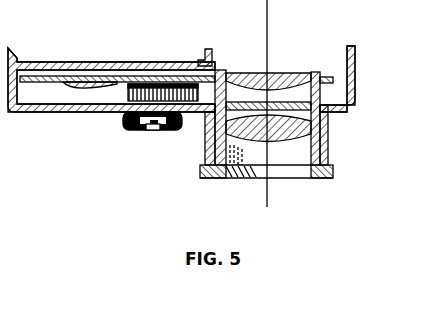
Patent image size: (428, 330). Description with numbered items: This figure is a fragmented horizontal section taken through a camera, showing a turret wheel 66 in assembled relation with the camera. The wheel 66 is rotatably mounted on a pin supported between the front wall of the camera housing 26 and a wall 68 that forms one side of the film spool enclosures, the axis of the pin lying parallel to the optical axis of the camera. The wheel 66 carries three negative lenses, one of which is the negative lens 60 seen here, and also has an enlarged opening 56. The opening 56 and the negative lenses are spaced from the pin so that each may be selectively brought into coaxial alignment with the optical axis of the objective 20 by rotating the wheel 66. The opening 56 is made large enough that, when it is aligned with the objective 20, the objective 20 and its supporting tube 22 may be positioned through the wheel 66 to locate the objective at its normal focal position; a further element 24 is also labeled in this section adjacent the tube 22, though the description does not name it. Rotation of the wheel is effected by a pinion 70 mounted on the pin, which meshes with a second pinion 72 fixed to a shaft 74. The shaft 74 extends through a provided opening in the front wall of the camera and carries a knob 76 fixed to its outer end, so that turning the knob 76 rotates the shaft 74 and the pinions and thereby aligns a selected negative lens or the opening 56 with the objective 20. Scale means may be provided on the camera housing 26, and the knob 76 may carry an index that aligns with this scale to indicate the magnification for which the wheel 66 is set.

The objective 20 is at (283, 184).
The tube 22 is at (317, 172).
The housing 24 is at (204, 146).
The camera housing 26 is at (347, 114).
The opening 56 is at (327, 77).
The negative lens 60 is at (63, 87).
The turret wheel 66 is at (155, 76).
The wall 68 is at (104, 62).
The pinion 70 is at (190, 77).
The second pinion 72 is at (122, 101).
The shaft 74 is at (137, 121).
The knob 76 is at (150, 129).